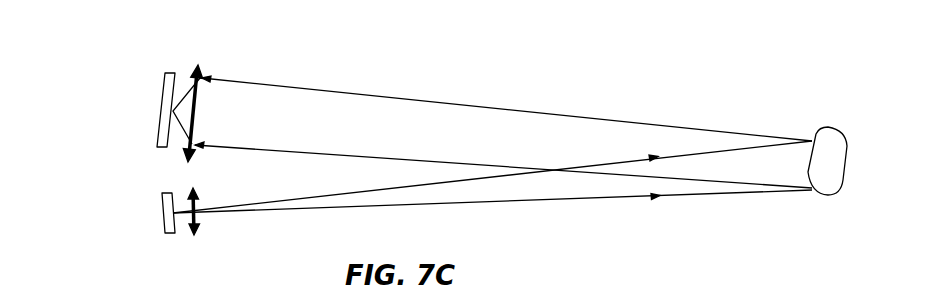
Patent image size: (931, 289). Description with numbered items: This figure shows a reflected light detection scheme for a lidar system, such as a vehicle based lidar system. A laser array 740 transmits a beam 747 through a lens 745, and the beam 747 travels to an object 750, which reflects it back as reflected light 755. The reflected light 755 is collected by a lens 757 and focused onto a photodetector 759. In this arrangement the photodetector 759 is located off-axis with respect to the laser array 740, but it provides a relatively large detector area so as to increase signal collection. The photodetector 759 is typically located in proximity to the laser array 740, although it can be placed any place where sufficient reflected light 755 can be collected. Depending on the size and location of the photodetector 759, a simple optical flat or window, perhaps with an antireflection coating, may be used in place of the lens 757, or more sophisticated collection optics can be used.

The laser array 740 is at (162, 212).
The lens 745 is at (197, 235).
The beam 747 is at (637, 198).
The object 750 is at (832, 128).
The reflected light 755 is at (525, 110).
The lens 757 is at (200, 65).
The photodetector 759 is at (164, 88).